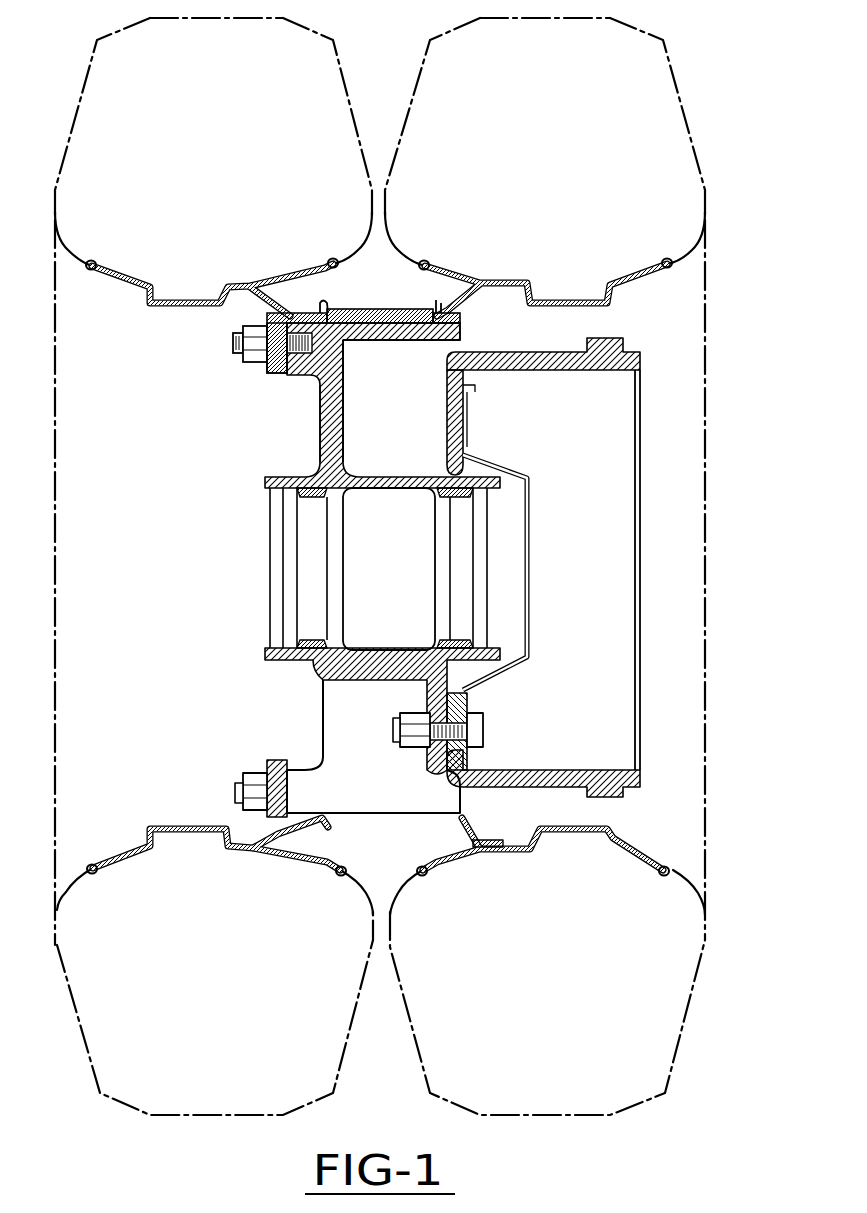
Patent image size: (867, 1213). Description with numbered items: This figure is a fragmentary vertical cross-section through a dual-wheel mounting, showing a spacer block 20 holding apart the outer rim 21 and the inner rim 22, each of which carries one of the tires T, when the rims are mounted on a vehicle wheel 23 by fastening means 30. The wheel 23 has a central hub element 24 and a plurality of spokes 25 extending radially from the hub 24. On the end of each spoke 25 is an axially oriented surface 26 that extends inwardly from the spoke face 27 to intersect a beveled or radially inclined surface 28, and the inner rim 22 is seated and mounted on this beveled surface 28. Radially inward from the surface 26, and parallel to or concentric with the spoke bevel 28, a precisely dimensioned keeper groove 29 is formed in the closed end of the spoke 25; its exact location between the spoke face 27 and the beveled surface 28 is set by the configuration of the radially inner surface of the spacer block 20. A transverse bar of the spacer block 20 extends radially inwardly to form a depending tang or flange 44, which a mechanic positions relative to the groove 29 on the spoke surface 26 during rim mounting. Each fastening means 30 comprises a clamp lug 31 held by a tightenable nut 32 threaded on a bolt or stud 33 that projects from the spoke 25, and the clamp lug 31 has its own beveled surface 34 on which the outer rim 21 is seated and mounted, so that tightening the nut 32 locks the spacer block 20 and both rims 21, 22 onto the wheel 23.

The tires T is at (340, 50).
The spacer block 20 is at (310, 491).
The outer rim 21 is at (147, 298).
The inner rim 22 is at (541, 279).
The wheel 23 is at (263, 593).
The hub element 24 is at (394, 556).
The spoke 25 is at (320, 432).
The axially oriented surface 26 is at (413, 312).
The spoke face 27 is at (267, 318).
The beveled surface 28 is at (453, 312).
The keeper groove 29 is at (373, 340).
The fastening means 30 is at (188, 381).
The clamp lug 31 is at (273, 370).
The nut 32 is at (254, 362).
The stud 33 is at (233, 344).
The beveled surface of clamp lug 34 is at (312, 306).
The tang 44 is at (382, 312).